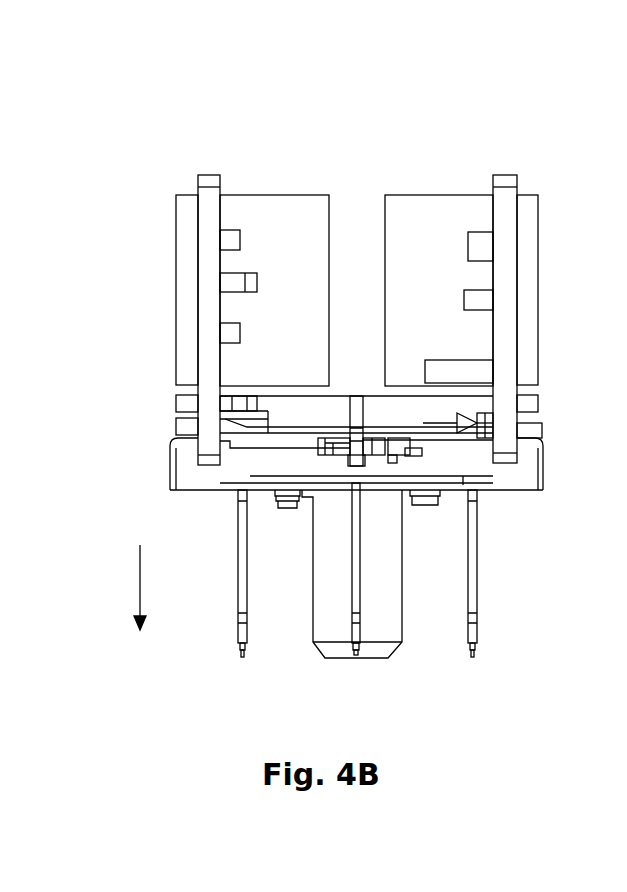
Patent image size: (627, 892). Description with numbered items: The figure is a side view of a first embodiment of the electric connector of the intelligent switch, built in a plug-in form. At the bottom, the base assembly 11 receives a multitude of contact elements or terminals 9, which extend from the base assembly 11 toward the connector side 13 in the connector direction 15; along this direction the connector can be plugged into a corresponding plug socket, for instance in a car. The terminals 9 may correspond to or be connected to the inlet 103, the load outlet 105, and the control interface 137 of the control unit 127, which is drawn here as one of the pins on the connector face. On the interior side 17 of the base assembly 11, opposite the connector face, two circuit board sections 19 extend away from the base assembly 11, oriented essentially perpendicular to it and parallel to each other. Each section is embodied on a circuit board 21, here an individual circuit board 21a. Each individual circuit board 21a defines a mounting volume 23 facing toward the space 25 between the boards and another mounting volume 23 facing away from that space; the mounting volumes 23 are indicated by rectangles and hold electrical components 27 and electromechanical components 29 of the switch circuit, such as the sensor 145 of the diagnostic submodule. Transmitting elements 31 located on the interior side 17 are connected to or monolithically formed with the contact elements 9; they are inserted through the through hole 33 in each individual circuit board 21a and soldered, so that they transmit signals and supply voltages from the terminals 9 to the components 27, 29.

The space 25 is at (350, 166).
The mounting volume 23 is at (312, 273).
The interior side 17 is at (166, 325).
The circuit board section 19 is at (207, 208).
The circuit board 21 is at (207, 250).
The individual circuit board 21a is at (503, 193).
The electrical component 27 is at (240, 240).
The electromechanical component 29 is at (265, 283).
The control unit 127 is at (480, 250).
The sensor 145 is at (487, 302).
The transmitting element 31 is at (290, 403).
The base assembly 11 is at (178, 475).
The through hole 33 is at (565, 483).
The terminal 9 is at (242, 525).
The load outlet 105 is at (245, 633).
The inlet 103 is at (362, 625).
The control interface 137 is at (480, 612).
The connector side 13 is at (497, 508).
The connector direction 15 is at (143, 575).